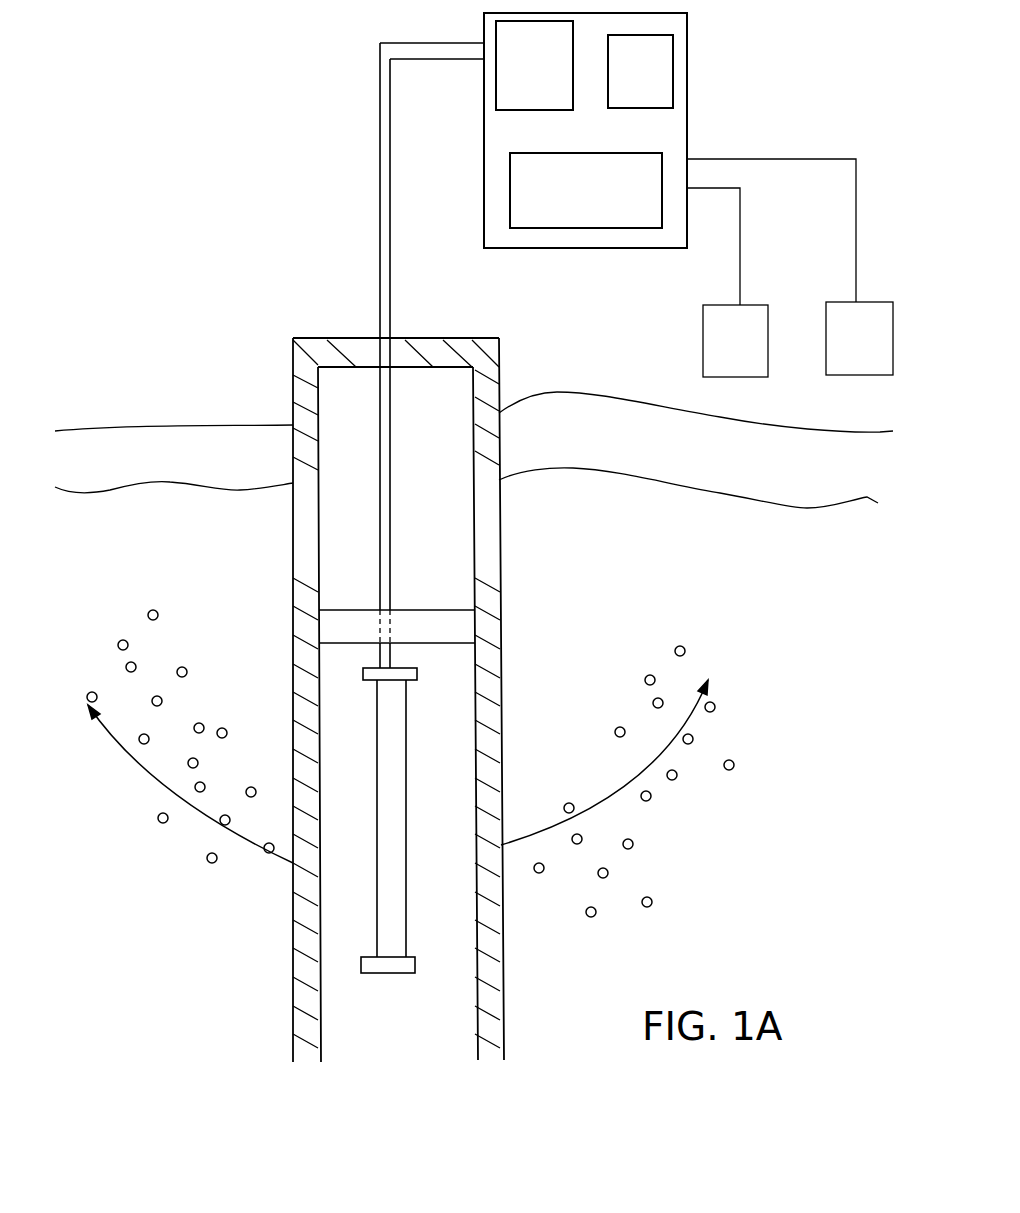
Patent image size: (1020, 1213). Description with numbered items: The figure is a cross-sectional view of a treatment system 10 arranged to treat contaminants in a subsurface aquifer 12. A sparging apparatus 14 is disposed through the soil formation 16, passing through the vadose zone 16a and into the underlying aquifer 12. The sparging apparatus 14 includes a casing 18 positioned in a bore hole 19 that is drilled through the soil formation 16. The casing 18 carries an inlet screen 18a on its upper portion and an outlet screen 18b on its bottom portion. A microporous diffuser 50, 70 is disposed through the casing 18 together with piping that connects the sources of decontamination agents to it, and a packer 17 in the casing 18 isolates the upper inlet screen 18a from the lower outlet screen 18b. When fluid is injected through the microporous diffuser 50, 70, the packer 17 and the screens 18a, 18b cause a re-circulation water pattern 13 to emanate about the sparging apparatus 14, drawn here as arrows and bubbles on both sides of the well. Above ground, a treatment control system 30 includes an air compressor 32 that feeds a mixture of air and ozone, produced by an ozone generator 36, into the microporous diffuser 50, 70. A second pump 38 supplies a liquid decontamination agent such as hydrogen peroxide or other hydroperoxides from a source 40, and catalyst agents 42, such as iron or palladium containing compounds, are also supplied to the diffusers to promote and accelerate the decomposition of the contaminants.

The treatment system 10 is at (309, 259).
The subsurface aquifer 12 is at (718, 857).
The re-circulation water pattern 13 is at (401, 763).
The sparging apparatus 14 is at (248, 923).
The soil formation 16 is at (138, 538).
The vadose zone 16a is at (605, 448).
The packer 17 is at (452, 625).
The casing 18 is at (588, 545).
The inlet screen 18a is at (502, 550).
The outlet screen 18b is at (558, 762).
The bore hole 19 is at (276, 318).
The treatment control system 30 is at (728, 91).
The air compressor 32 is at (450, 147).
The ozone generator 36 is at (534, 65).
The second pump 38 is at (586, 190).
The source 40 is at (703, 355).
The catalyst agents 42 is at (857, 300).
The microporous diffuser 50 is at (591, 787).
The microporous diffuser 70 is at (418, 731).